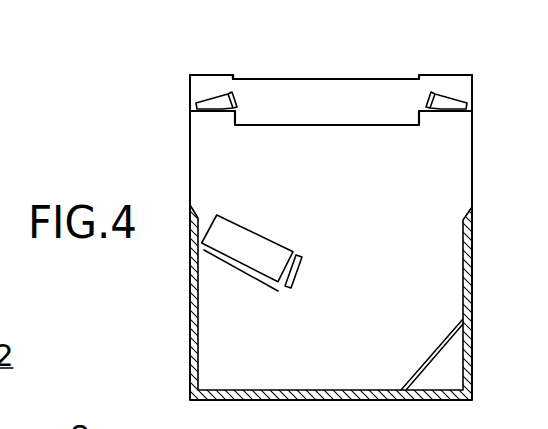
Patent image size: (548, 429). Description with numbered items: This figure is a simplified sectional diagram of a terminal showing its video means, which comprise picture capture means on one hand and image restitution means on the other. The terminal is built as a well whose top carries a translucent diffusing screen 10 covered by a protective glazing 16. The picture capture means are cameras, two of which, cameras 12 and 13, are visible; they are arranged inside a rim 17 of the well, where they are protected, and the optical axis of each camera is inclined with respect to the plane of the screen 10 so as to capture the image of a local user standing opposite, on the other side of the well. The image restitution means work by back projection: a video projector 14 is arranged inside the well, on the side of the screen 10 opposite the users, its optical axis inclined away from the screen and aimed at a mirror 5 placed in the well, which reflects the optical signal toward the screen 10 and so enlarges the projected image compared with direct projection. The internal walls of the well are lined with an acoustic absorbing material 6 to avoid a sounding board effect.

The mirror 5 is at (427, 365).
The acoustic absorbing material 6 is at (190, 282).
The screen 10 is at (367, 126).
The camera 12 is at (217, 105).
The camera 13 is at (452, 105).
The video projector 14 is at (242, 234).
The protective glazing 16 is at (272, 79).
The rim 17 is at (215, 75).